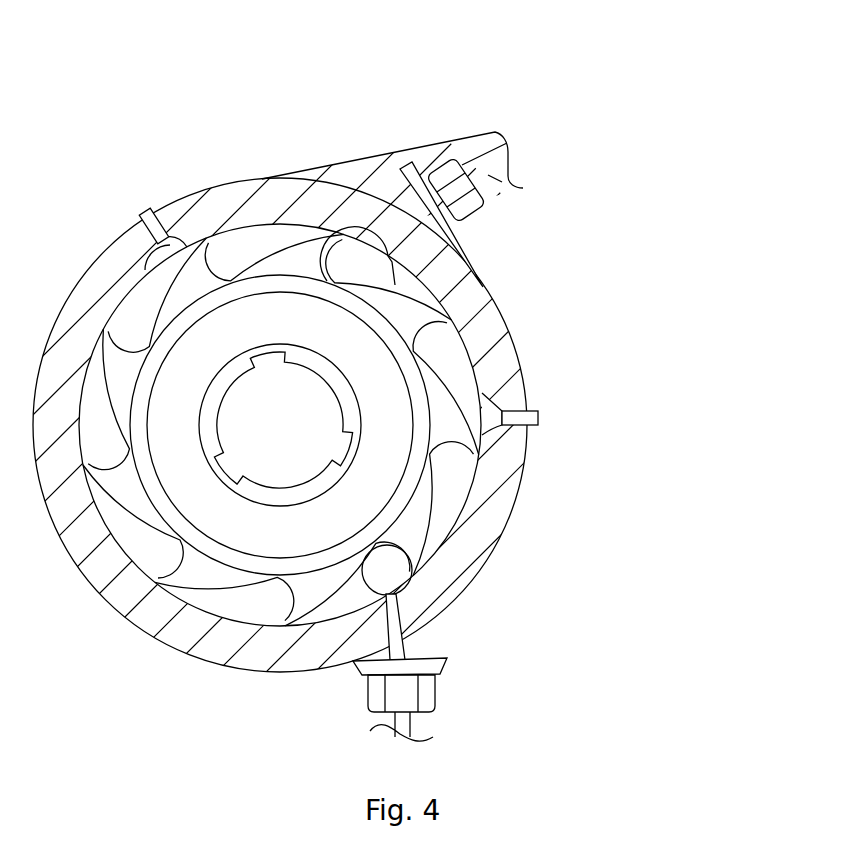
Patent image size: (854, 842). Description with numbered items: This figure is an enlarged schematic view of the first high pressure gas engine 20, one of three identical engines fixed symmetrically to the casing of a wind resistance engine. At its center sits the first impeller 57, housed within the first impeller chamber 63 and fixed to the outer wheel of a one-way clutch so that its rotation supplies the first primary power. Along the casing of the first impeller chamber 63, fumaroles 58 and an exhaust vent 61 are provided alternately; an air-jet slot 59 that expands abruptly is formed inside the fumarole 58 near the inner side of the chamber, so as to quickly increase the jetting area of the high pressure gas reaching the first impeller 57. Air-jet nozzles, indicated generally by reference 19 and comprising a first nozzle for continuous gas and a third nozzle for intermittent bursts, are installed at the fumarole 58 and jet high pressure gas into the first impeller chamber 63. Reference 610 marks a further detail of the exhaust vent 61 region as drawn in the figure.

The first high pressure gas engine 20 is at (495, 132).
The arm end 19 is at (523, 188).
The fumarole 58 is at (413, 220).
The air-jet slot 59 is at (370, 242).
The first impeller 57 is at (415, 315).
The tab 610 is at (540, 413).
The exhaust vent 61 is at (533, 428).
The first impeller chamber 63 is at (455, 477).